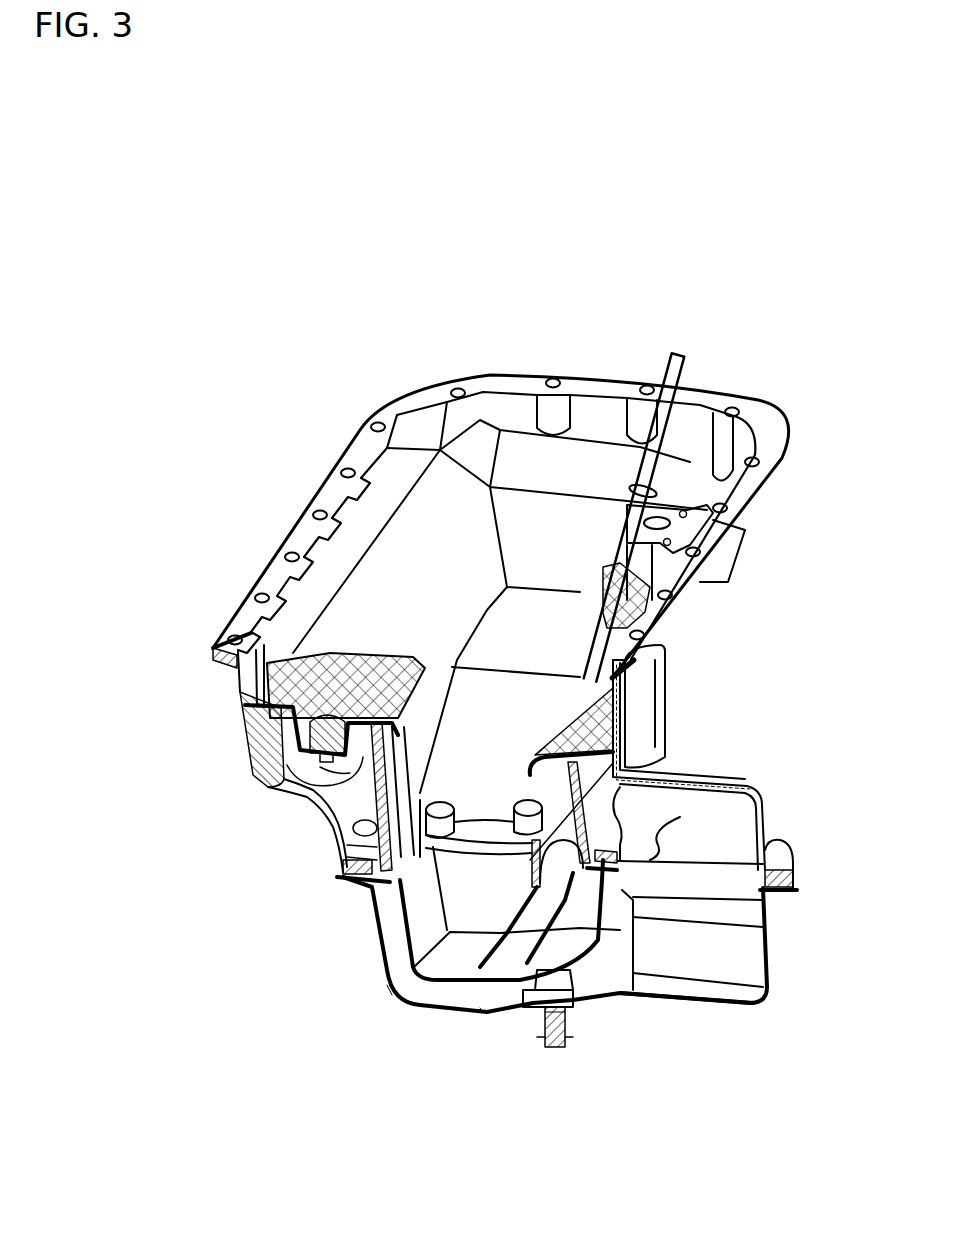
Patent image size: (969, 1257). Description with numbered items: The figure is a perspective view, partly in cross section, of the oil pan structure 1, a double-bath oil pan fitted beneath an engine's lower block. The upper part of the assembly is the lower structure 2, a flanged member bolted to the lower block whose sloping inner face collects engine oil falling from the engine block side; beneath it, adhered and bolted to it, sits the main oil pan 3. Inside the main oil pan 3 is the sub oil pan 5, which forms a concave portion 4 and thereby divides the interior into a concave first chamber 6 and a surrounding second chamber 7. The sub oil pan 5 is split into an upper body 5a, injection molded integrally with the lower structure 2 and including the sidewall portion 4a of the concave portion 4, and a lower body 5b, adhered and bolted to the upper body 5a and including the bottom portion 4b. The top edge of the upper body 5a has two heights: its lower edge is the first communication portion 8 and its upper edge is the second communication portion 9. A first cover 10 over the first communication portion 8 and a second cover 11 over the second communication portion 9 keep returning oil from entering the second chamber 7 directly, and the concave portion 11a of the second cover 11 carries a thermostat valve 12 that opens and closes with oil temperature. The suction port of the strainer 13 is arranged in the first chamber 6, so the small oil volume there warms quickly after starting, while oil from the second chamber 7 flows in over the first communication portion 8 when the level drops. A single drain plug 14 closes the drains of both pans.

The oil pan structure 1 is at (796, 1096).
The lower structure 2 is at (740, 487).
The main oil pan 3 is at (767, 957).
The concave portion 4 is at (418, 928).
The sidewall portion 4a is at (628, 773).
The bottom portion 4b is at (470, 987).
The sub oil pan 5 is at (714, 775).
The upper body 5a is at (650, 778).
The lower body 5b is at (622, 890).
The first chamber 6 is at (427, 902).
The second chamber 7 is at (417, 987).
The first communication portion 8 is at (602, 750).
The second communication portion 9 is at (327, 812).
The first cover 10 is at (663, 722).
The second cover 11 is at (253, 705).
The concave portion 11a is at (302, 731).
The thermostat valve 12 is at (252, 768).
The strainer 13 is at (580, 972).
The drain plug 14 is at (557, 1050).